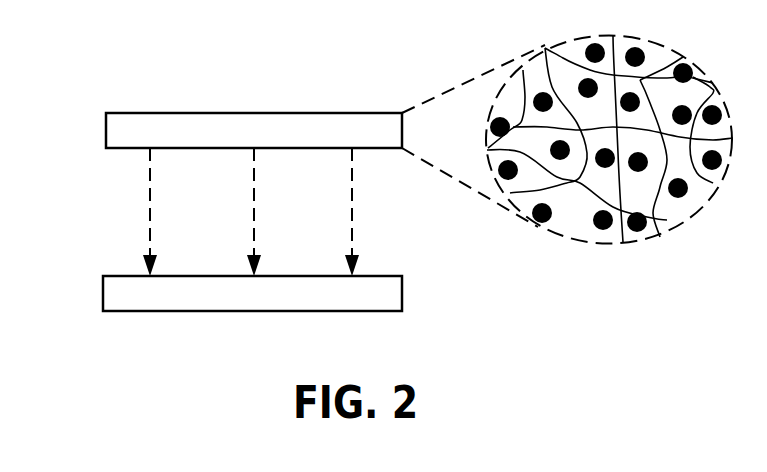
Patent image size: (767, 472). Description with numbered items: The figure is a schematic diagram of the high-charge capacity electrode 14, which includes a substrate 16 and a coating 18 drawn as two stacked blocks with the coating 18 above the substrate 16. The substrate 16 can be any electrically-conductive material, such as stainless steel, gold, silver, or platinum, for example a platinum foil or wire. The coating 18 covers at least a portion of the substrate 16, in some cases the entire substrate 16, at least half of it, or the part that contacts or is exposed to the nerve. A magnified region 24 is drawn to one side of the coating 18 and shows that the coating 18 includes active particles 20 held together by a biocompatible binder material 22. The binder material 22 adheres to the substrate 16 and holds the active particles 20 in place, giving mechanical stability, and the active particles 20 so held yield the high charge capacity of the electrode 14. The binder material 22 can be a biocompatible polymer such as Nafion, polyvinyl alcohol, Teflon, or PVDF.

The high-charge capacity electrode 14 is at (107, 74).
The substrate 16 is at (320, 311).
The coating 18 is at (320, 113).
The active particles 20 is at (643, 52).
The binder material 22 is at (513, 193).
The magnified region 24 is at (523, 55).